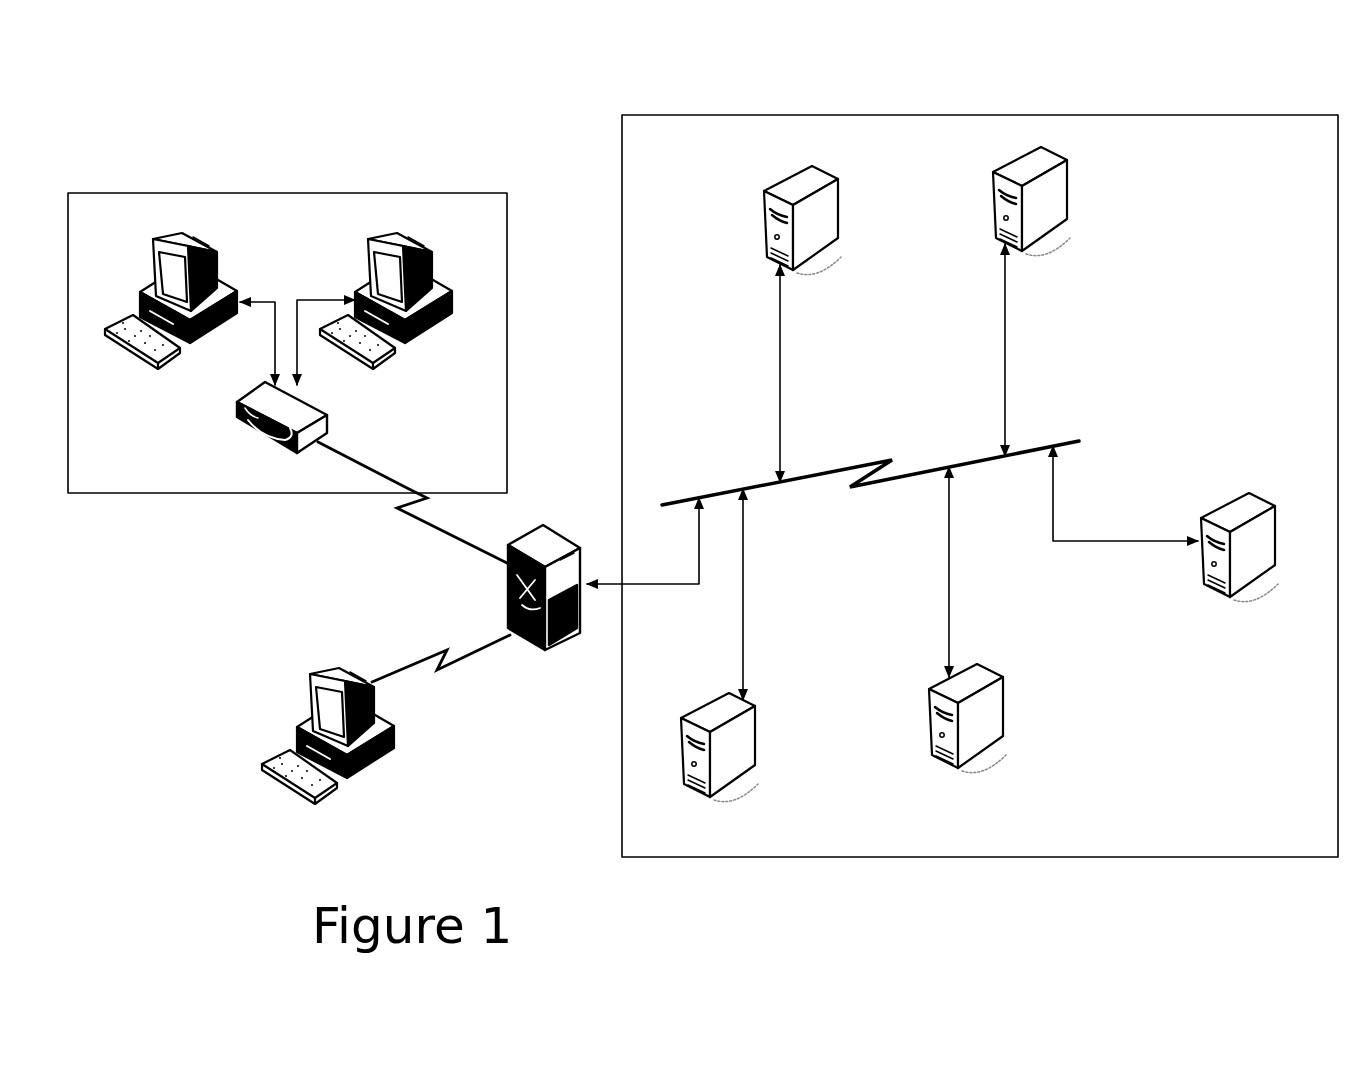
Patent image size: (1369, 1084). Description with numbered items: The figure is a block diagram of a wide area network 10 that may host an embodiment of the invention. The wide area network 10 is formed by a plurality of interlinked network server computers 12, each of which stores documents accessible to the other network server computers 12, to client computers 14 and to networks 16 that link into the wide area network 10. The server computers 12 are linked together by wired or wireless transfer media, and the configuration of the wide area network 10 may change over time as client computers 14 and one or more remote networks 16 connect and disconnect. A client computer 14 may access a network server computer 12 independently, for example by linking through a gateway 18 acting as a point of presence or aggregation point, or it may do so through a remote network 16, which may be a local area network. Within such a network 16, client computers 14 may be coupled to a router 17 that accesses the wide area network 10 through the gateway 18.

The wide area network 10 is at (572, 117).
The network server computer 12 is at (832, 177).
The client computer 14 is at (217, 250).
The remote network 16 is at (285, 193).
The router 17 is at (568, 645).
The gateway 18 is at (327, 418).